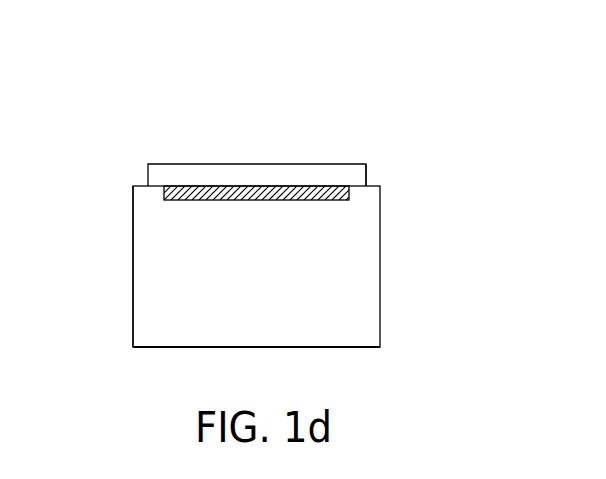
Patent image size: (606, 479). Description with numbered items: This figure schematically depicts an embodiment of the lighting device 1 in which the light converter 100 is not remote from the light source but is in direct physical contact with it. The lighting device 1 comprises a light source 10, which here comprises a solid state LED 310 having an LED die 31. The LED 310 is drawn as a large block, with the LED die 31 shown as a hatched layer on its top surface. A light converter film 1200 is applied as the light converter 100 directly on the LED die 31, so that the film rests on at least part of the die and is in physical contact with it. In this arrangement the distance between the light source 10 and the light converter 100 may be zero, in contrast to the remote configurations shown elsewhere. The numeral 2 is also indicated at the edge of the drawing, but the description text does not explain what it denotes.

The lighting device 1 is at (82, 227).
The electronic device 2 is at (0, 130).
The light source 10 is at (390, 277).
The LED die 31 is at (253, 200).
The light converter 100 is at (384, 164).
The LED 310 is at (127, 303).
The light converter film 1200 is at (130, 167).